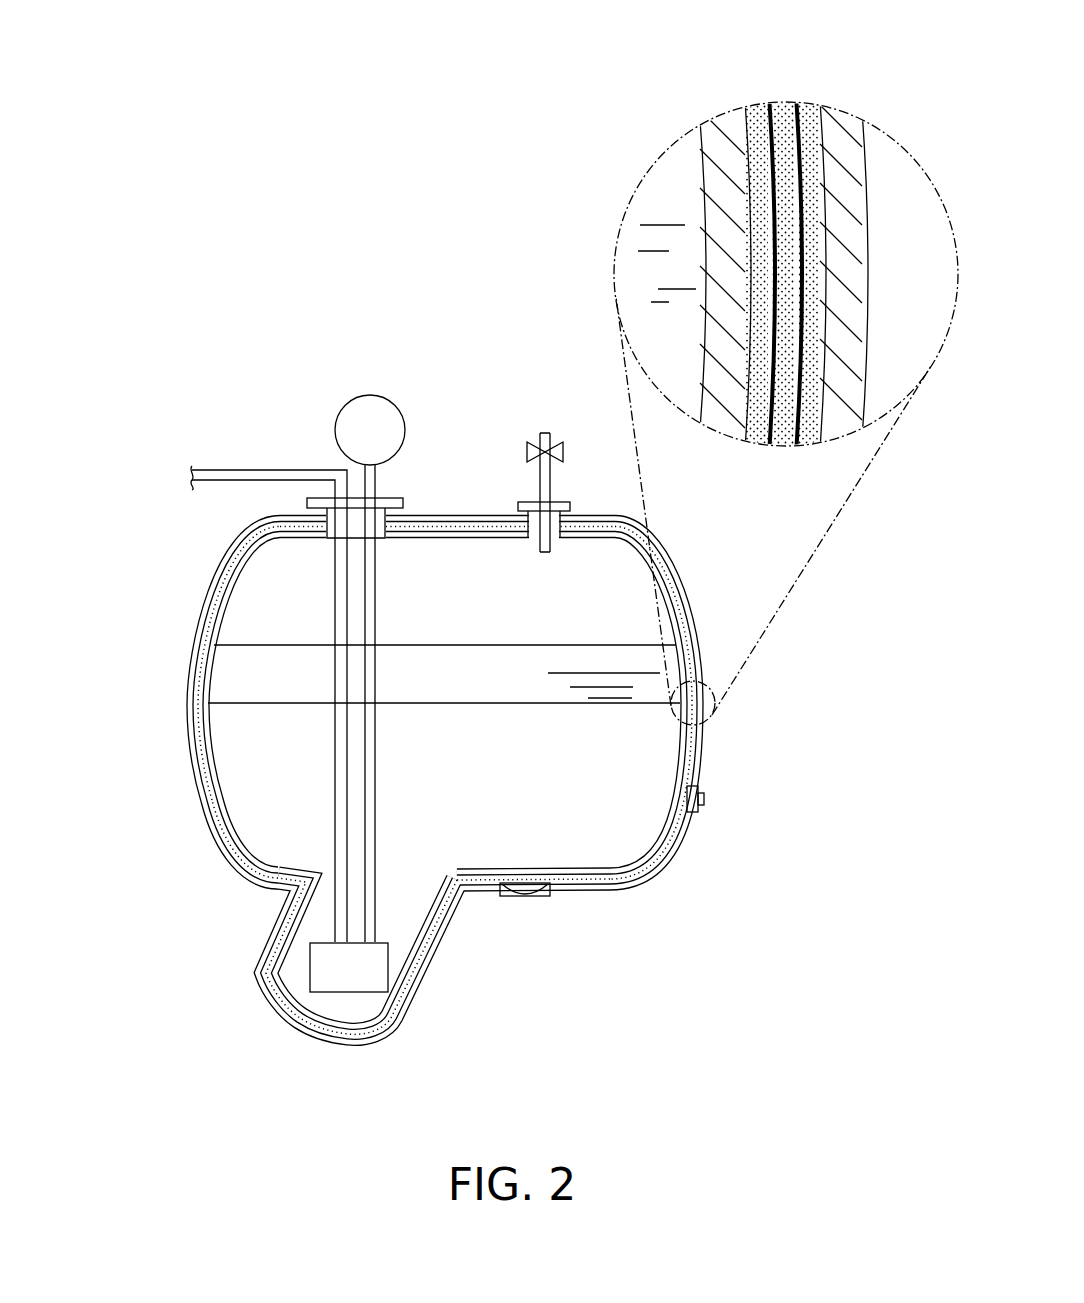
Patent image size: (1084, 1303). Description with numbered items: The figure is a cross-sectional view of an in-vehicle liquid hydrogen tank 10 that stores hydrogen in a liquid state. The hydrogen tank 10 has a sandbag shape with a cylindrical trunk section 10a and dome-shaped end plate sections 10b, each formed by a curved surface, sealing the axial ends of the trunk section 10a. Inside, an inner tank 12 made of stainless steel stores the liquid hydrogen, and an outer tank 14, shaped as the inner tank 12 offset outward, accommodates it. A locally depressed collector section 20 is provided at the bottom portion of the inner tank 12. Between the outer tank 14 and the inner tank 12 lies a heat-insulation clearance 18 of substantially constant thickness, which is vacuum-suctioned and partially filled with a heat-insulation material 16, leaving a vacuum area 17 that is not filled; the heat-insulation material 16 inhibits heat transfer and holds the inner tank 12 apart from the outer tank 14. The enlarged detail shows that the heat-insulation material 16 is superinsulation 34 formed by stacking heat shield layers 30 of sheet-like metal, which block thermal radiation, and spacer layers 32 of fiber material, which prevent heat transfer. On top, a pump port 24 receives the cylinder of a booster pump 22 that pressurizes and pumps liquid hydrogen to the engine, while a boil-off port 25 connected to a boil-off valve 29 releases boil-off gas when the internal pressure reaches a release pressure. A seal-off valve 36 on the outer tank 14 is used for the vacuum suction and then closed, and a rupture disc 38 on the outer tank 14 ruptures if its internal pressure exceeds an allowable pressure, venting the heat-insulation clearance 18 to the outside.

The liquid hydrogen tank 10 is at (468, 358).
The trunk section 10a is at (457, 513).
The end plate section 10b is at (186, 718).
The inner tank 12 is at (720, 131).
The outer tank 14 is at (844, 131).
The heat-insulation material 16 is at (201, 803).
The vacuum area 17 is at (227, 868).
The heat-insulation clearance 18 is at (445, 781).
The collector section 20 is at (270, 930).
The pump 22 is at (388, 963).
The pump port 24 is at (393, 498).
The boil-off port 25 is at (530, 502).
The boil-off valve 29 is at (532, 437).
The heat shield layer 30 is at (756, 116).
The spacer layer 32 is at (776, 116).
The superinsulation 34 is at (720, 51).
The seal-off valve 36 is at (705, 800).
The rupture disc 38 is at (540, 898).